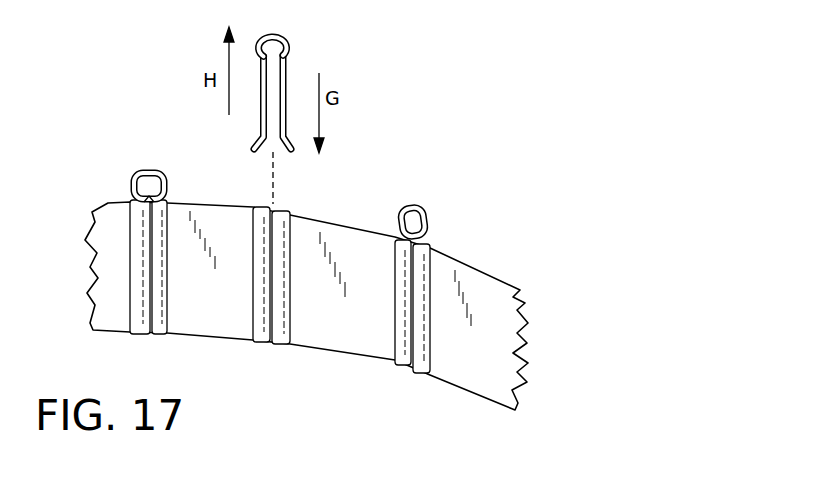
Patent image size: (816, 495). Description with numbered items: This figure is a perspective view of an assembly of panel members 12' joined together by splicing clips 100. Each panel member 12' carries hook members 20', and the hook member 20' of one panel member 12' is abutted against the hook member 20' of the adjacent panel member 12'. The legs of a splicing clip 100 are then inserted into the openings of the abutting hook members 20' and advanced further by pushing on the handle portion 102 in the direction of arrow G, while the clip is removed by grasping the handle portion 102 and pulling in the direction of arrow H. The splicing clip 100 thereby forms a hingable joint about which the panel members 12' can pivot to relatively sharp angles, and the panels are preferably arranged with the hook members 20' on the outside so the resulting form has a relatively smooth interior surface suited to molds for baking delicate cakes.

The panel member 12' is at (306, 306).
The hook member 20' is at (264, 305).
The splicing clip 100 is at (262, 82).
The handle portion 102 is at (282, 34).